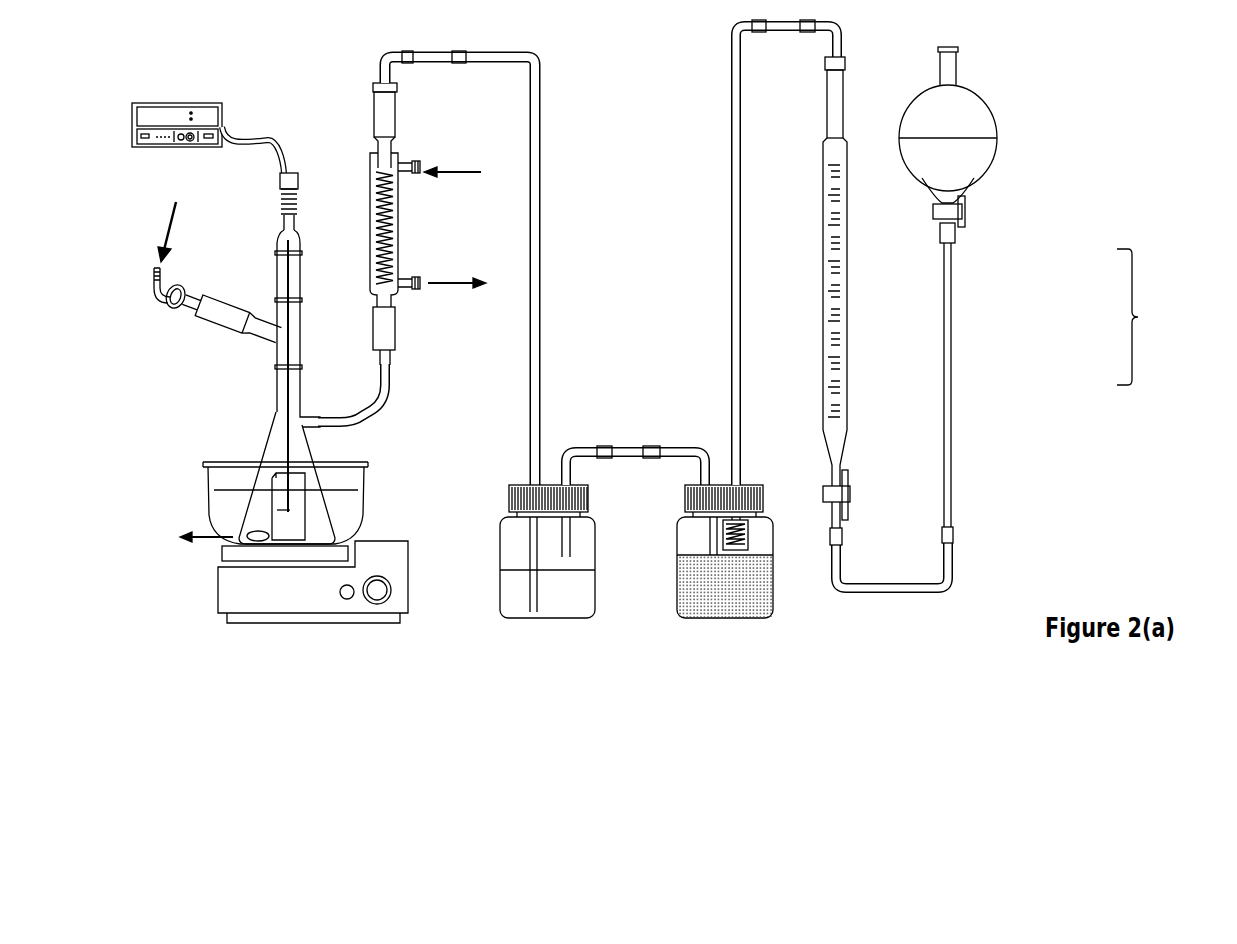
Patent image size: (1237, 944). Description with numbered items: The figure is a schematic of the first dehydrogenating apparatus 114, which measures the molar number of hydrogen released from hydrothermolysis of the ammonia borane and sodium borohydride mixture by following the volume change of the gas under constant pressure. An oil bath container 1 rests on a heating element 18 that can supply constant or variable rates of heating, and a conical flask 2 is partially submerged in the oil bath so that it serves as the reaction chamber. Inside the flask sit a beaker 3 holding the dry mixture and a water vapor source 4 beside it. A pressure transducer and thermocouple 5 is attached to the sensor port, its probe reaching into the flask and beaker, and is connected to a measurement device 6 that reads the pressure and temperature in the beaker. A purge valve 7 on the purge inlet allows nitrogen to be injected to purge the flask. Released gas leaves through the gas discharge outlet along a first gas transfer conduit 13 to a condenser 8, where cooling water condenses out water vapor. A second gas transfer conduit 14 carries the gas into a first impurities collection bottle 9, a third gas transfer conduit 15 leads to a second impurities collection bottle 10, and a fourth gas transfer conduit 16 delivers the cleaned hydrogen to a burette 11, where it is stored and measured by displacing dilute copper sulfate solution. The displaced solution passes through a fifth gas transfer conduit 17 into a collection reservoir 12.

The oil bath container 1 is at (363, 521).
The conical flask 2 is at (270, 435).
The beaker 3 is at (287, 541).
The water vapor source 4 is at (195, 533).
The pressure transducer and thermocouple 5 is at (298, 207).
The measurement device 6 is at (192, 107).
The purge valve 7 is at (184, 287).
The condenser 8 is at (421, 262).
The first impurities collection bottle 9 is at (553, 620).
The second impurities collection bottle 10 is at (722, 620).
The burette 11 is at (843, 302).
The collection reservoir 12 is at (990, 187).
The first gas transfer conduit 13 is at (372, 411).
The second gas transfer conduit 14 is at (539, 262).
The third gas transfer conduit 15 is at (614, 446).
The fourth gas transfer conduit 16 is at (731, 326).
The fifth gas transfer conduit 17 is at (871, 593).
The heating element 18 is at (363, 624).
The first dehydrogenating apparatus 114 is at (1138, 317).